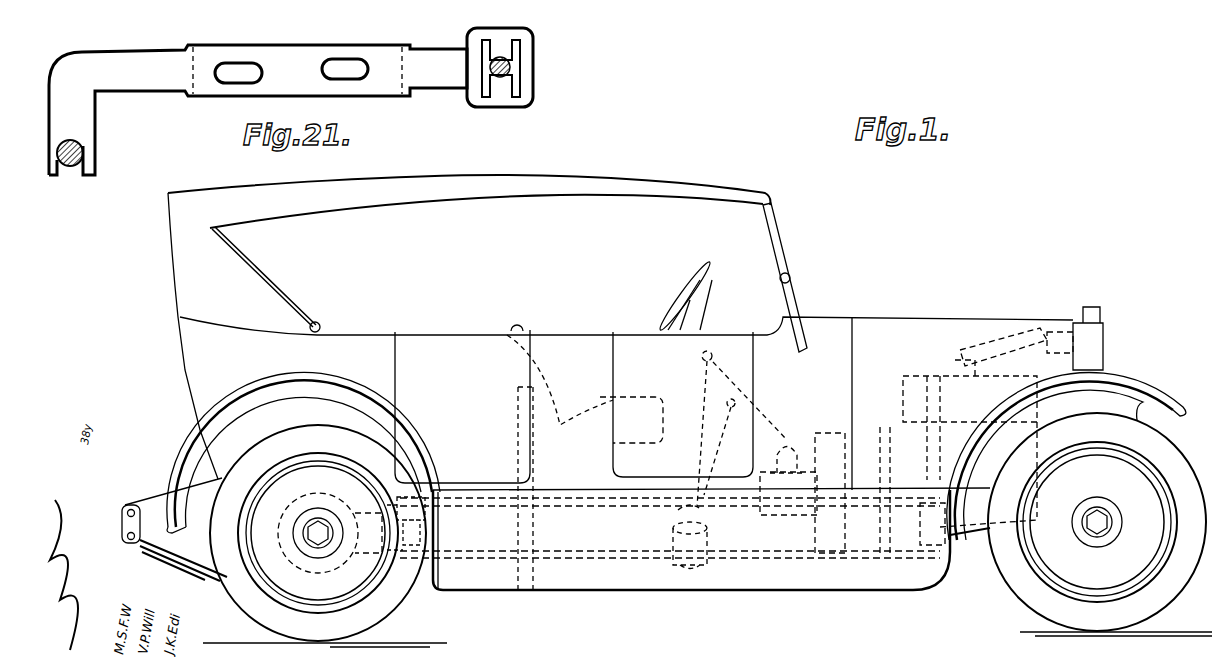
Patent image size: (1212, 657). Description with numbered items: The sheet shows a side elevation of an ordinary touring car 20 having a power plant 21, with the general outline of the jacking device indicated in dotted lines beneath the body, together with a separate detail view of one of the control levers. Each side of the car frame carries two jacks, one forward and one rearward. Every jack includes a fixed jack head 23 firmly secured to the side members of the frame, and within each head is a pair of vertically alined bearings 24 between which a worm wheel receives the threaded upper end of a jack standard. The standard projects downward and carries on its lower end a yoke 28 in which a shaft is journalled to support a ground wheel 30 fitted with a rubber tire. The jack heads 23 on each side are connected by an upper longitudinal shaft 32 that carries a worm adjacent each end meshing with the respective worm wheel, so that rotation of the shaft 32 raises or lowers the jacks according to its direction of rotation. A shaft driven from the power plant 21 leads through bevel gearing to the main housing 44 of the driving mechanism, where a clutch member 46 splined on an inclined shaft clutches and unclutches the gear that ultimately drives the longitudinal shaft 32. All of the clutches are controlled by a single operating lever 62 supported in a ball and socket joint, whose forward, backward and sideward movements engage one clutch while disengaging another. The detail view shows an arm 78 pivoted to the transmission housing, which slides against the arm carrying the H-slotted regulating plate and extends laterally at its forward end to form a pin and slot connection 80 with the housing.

In FIG. 1, the touring car 20 is at (900, 327).
In FIG. 1, the power plant 21 is at (867, 450).
In FIG. 1, the jack head 23 is at (523, 510).
In FIG. 1, the bearings 24 is at (805, 557).
In FIG. 1, the yoke 28 is at (920, 523).
In FIG. 1, the ground wheel 30 is at (523, 593).
In FIG. 1, the upper longitudinal shaft 32 is at (640, 510).
In FIG. 1, the main housing 44 is at (698, 570).
In FIG. 1, the clutch member 46 is at (727, 427).
In FIG. 1, the operating lever 62 is at (677, 458).
In FIG. 21, the arm 78 is at (448, 78).
In FIG. 21, the pin and slot connection 80 is at (83, 143).